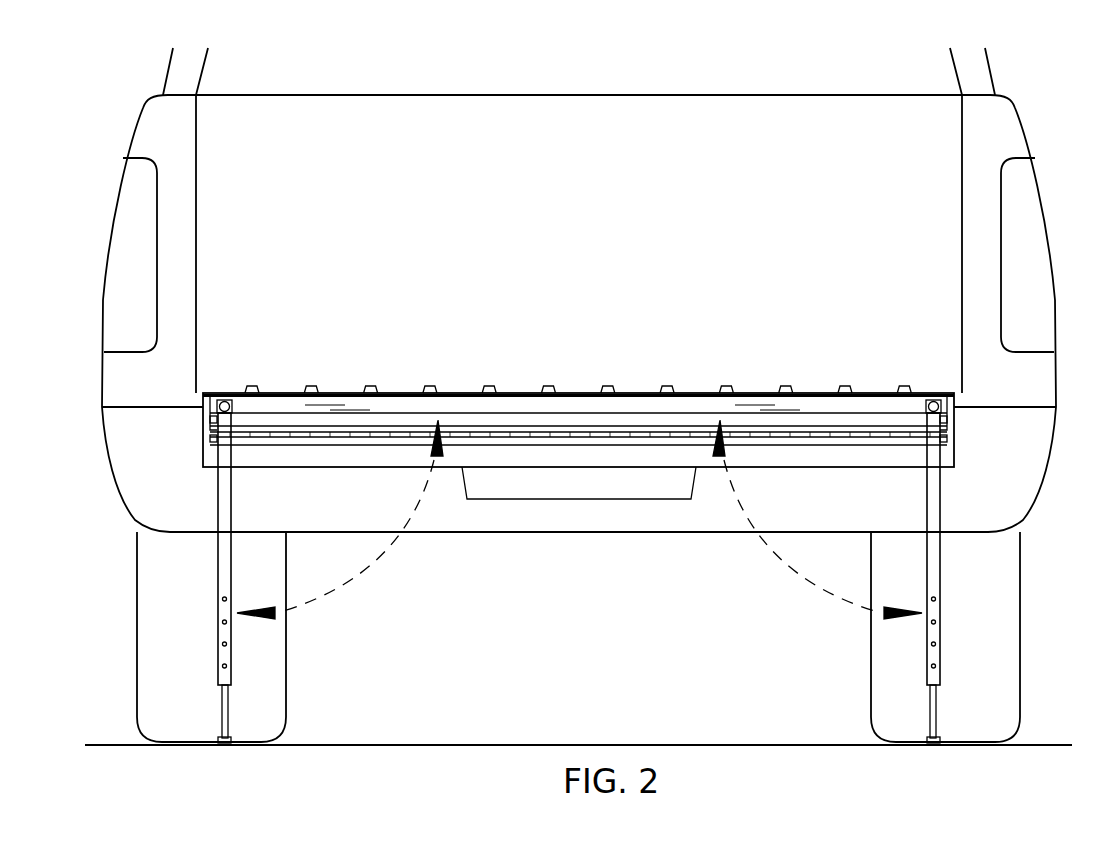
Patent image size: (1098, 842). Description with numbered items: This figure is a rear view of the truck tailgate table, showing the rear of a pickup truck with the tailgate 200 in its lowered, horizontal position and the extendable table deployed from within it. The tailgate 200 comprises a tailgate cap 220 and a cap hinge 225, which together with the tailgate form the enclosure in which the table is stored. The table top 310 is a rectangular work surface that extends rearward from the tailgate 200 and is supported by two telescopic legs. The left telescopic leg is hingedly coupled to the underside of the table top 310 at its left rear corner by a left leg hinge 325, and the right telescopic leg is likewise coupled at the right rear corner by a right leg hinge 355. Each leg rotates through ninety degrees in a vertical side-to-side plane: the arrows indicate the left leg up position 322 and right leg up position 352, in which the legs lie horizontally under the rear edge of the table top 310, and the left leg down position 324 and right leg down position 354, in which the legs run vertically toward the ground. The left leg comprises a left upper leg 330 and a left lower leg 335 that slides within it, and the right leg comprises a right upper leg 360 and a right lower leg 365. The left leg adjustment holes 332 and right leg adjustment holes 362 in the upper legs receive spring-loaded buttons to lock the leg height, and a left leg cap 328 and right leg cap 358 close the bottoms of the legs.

The tailgate 200 is at (947, 423).
The tailgate cap 220 is at (955, 453).
The cap hinge 225 is at (317, 437).
The table top 310 is at (572, 408).
The left leg up position 322 is at (464, 447).
The left leg down position 324 is at (335, 559).
The left leg hinge 325 is at (224, 400).
The left leg cap 328 is at (231, 740).
The left upper leg 330 is at (231, 567).
The left leg adjustment holes 332 is at (208, 594).
The left lower leg 335 is at (231, 708).
The right leg up position 352 is at (694, 447).
The right leg down position 354 is at (825, 559).
The right leg hinge 355 is at (935, 400).
The right leg cap 358 is at (940, 739).
The right upper leg 360 is at (940, 567).
The right leg adjustment holes 362 is at (948, 594).
The right lower leg 365 is at (940, 707).